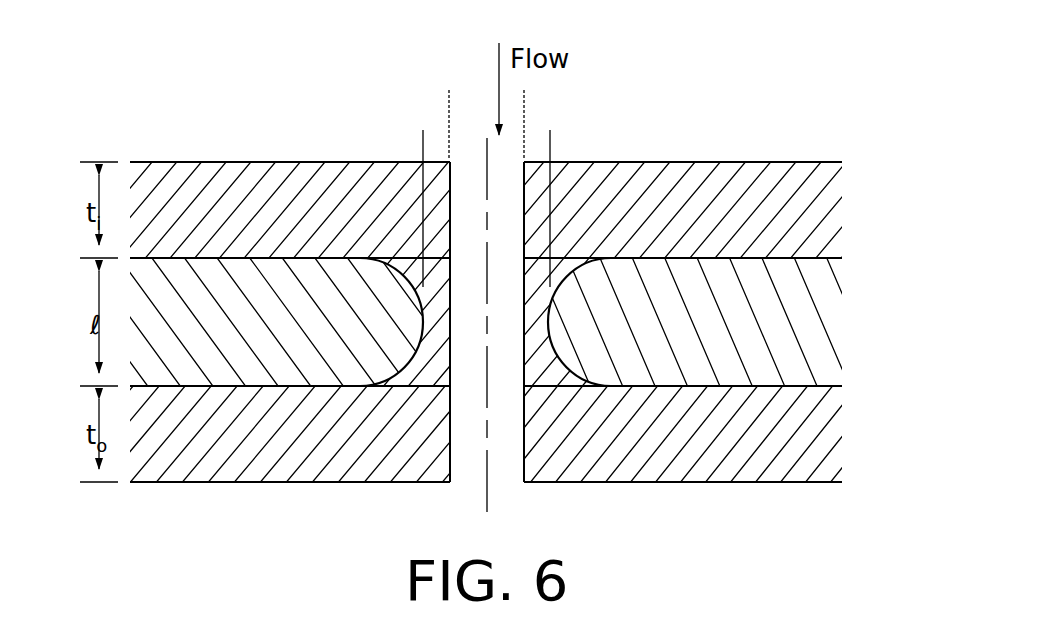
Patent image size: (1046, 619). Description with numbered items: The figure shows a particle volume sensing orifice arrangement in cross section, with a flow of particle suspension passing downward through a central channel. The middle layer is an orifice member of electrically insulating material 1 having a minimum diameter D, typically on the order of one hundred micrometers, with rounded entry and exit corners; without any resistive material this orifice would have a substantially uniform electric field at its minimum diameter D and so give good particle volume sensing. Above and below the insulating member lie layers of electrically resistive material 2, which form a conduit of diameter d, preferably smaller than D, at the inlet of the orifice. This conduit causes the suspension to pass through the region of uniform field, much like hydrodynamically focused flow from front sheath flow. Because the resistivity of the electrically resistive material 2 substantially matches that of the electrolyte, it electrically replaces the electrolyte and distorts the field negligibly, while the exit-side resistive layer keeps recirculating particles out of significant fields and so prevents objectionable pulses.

The electrically insulating material 1 is at (852, 342).
The electrically resistive material 2 is at (852, 210).
The conduit diameter d is at (398, 102).
The orifice diameter D is at (328, 141).